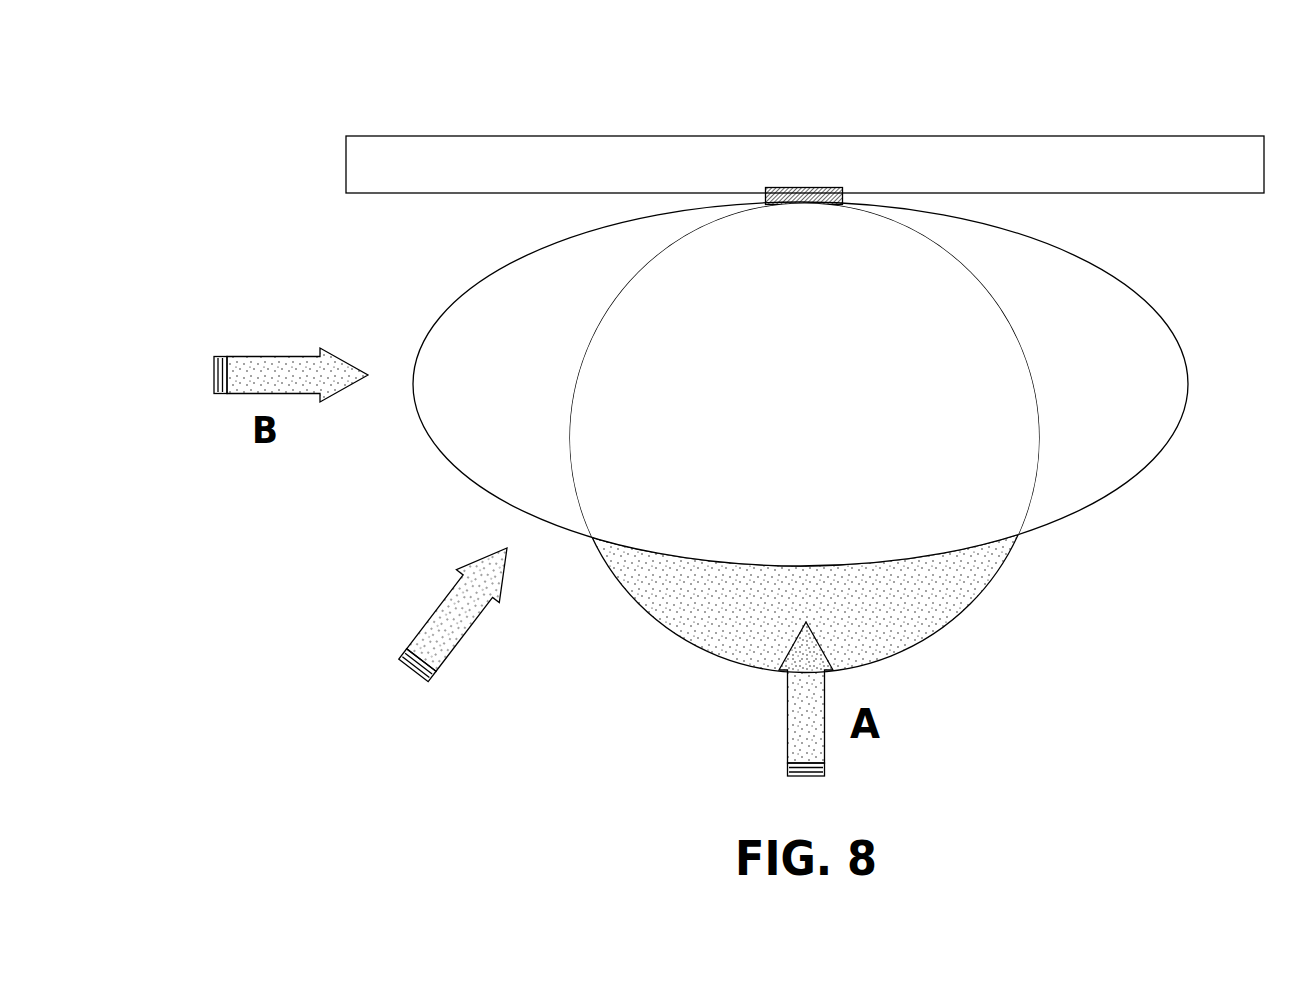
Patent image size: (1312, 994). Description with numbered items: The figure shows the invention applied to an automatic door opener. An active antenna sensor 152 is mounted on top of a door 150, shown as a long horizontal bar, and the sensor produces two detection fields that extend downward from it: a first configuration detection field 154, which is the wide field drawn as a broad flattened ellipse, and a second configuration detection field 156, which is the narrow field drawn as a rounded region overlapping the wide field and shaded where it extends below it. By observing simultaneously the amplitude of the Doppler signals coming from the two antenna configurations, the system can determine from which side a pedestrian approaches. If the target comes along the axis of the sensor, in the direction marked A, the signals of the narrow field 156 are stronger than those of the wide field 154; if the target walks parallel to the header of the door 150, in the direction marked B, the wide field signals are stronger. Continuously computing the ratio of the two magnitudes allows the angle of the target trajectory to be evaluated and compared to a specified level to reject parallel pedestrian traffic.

The door 150 is at (454, 170).
The active antenna sensor 152 is at (810, 187).
The first configuration detection field 154 is at (419, 422).
The second configuration detection field 156 is at (653, 617).